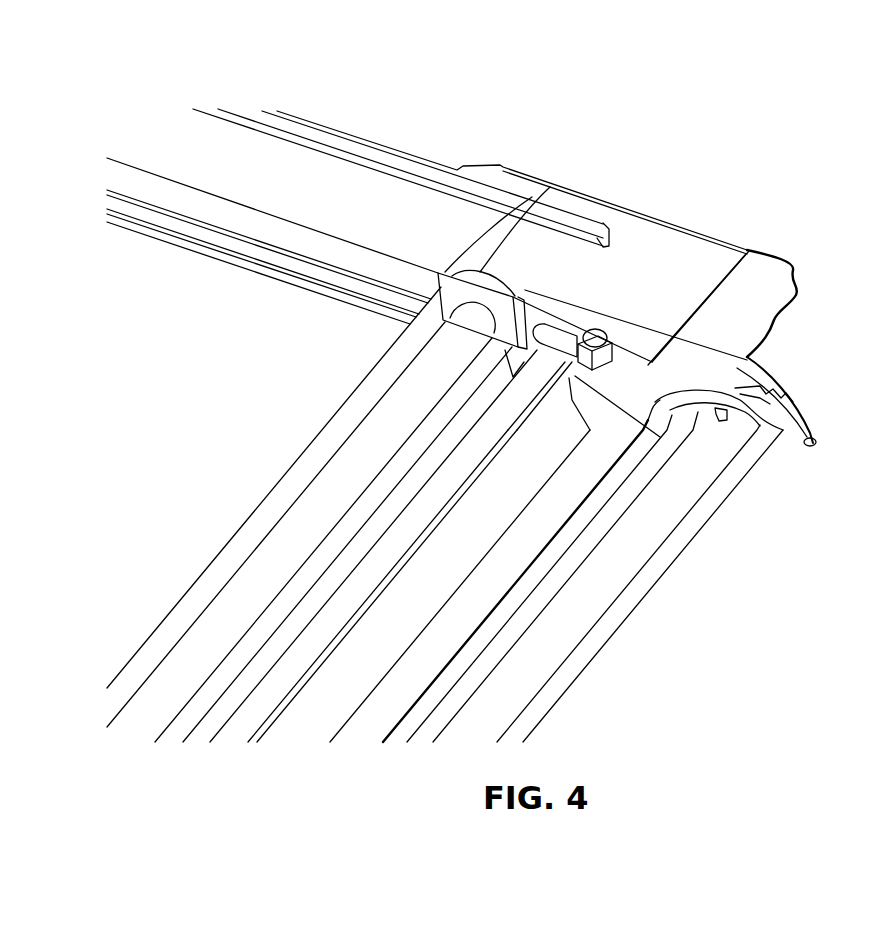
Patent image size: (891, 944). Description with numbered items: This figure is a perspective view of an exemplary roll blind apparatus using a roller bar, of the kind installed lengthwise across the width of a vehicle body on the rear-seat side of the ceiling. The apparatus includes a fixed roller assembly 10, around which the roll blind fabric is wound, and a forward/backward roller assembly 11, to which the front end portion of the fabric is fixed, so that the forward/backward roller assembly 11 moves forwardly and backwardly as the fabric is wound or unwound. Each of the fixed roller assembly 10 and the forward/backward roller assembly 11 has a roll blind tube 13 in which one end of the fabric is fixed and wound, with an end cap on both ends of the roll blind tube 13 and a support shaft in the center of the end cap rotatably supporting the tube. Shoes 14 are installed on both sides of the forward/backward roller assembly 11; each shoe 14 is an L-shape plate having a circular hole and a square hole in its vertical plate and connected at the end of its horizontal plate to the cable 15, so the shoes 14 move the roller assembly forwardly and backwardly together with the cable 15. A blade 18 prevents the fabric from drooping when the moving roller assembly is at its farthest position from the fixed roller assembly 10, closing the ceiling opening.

The fixed roller assembly 10 is at (708, 524).
The forward/backward roller assembly 11 is at (303, 436).
The roll blind tube 13 is at (287, 530).
The shoe 14 is at (532, 197).
The cable 15 is at (773, 380).
The blade 18 is at (455, 472).